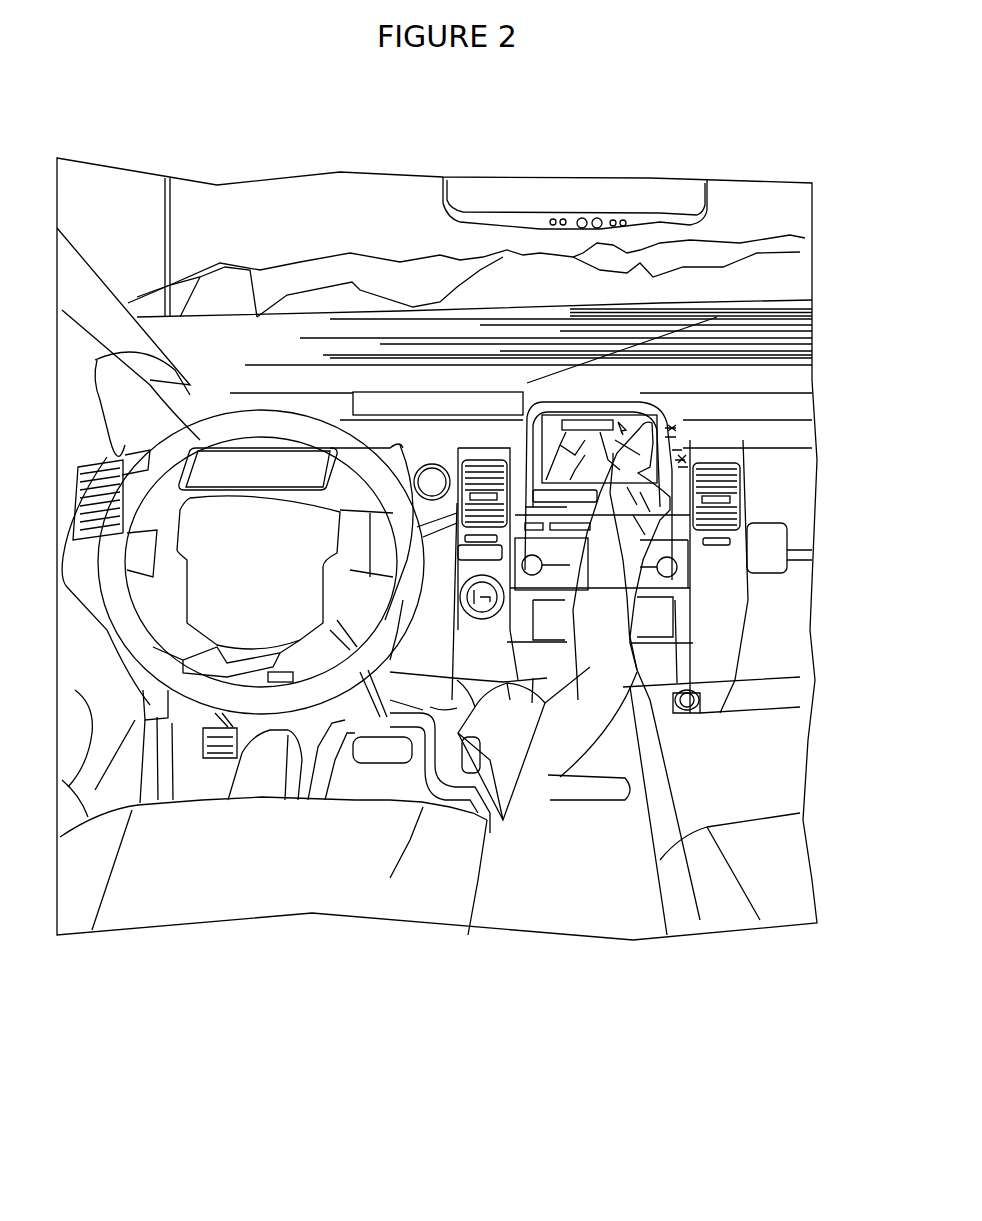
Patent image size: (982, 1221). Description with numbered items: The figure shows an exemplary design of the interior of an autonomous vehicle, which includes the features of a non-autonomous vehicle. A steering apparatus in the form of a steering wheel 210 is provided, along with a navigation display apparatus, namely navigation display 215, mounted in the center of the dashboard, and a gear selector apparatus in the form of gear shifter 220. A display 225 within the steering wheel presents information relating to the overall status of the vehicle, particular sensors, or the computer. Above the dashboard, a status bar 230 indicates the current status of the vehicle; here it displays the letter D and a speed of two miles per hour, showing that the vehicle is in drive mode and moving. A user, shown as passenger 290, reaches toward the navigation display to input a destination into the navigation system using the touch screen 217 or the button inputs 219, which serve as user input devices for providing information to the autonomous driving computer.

The steering wheel 210 is at (183, 690).
The navigation display 215 is at (613, 453).
The touch screen 217 is at (688, 713).
The button inputs 219 is at (683, 460).
The gear shifter 220 is at (440, 503).
The display 225 is at (257, 460).
The status bar 230 is at (370, 403).
The passenger 290 is at (573, 678).